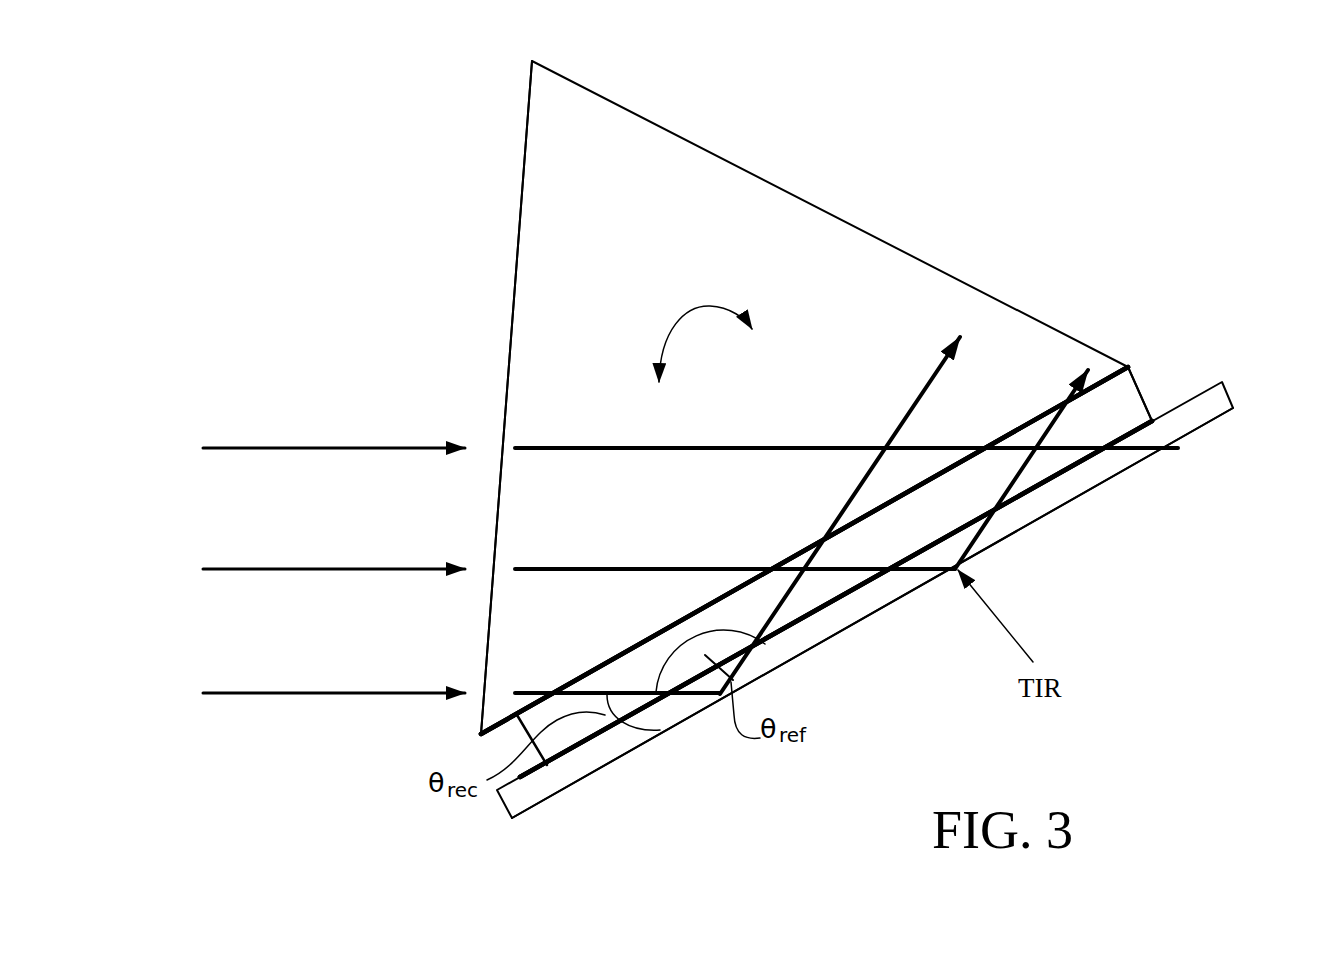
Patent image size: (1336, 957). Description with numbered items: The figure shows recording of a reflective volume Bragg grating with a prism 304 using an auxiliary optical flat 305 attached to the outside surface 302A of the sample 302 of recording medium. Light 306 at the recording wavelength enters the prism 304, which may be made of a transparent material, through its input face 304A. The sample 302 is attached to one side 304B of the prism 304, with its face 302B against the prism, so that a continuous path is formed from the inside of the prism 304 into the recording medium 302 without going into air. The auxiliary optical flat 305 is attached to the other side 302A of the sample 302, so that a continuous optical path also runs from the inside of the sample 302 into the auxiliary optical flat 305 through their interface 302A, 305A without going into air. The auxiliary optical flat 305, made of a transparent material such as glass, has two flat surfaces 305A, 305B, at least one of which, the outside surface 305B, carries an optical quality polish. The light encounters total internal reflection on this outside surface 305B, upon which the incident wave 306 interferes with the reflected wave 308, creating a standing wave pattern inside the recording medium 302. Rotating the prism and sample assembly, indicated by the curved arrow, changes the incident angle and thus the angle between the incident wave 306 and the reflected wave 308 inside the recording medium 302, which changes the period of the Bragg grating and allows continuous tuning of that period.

The sample 302 is at (1148, 404).
The outside surface of the sample 302A is at (1145, 425).
The top face of coupling element 302B is at (1102, 385).
The prism 304 is at (623, 148).
The input face of prism 304A is at (521, 170).
The side of the prism 304B is at (502, 727).
The auxiliary optical flat 305 is at (570, 767).
The flat surface of the auxiliary optical flat 305A is at (660, 730).
The outside surface of the auxiliary optical flat 305B is at (802, 655).
The light 306 is at (330, 399).
The reflected wave 308 is at (1005, 365).